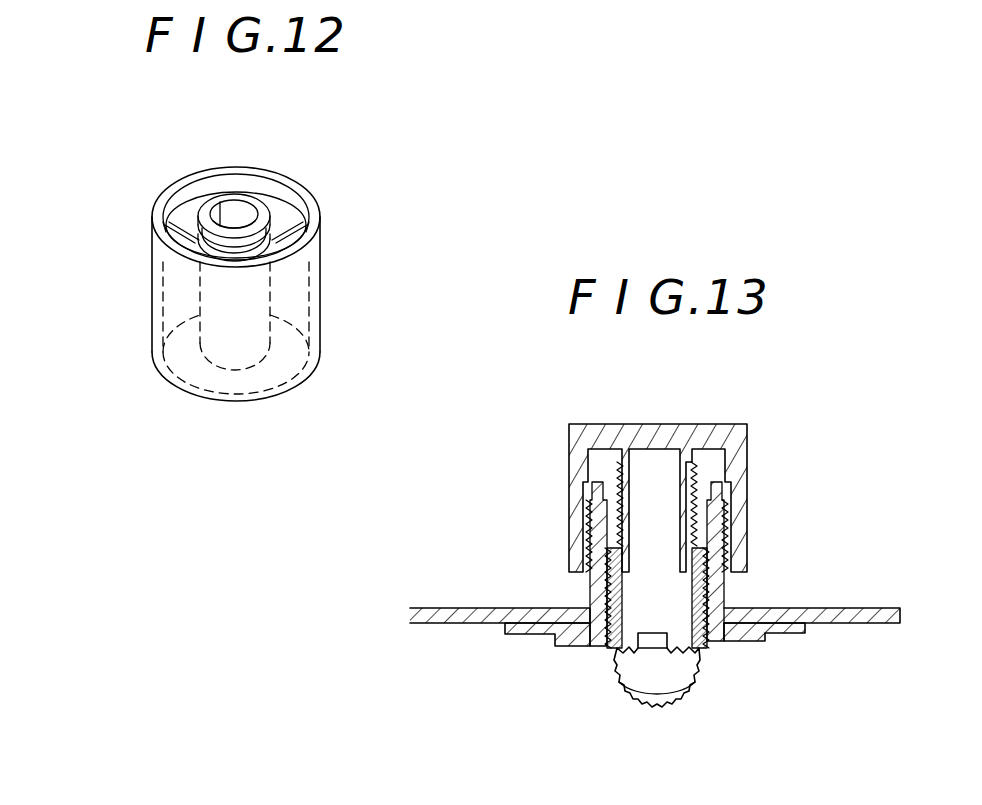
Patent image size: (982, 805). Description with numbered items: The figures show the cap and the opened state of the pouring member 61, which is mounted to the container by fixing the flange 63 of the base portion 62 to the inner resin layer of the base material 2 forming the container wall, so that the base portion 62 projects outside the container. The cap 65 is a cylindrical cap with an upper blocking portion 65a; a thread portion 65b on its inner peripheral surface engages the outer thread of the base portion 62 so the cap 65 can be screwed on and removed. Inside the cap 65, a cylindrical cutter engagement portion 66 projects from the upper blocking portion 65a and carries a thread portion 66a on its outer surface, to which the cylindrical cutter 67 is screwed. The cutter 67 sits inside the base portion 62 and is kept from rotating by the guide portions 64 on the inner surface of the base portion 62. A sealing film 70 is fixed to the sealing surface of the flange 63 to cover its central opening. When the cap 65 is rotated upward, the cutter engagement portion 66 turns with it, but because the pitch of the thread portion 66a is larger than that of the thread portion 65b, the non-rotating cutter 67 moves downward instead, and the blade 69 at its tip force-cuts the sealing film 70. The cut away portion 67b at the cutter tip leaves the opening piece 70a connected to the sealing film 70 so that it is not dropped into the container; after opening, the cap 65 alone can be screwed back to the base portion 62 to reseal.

In FIG. 13, the base material 2 is at (455, 608).
In FIG. 13, the pouring member 61 is at (655, 556).
In FIG. 13, the base portion 62 is at (674, 536).
In FIG. 13, the flange 63 is at (792, 628).
In FIG. 13, the guide portion 64 is at (712, 470).
In FIG. 12, the cap 65 is at (260, 283).
In FIG. 13, the cap 65 is at (740, 452).
In FIG. 12, the upper blocking portion 65a is at (287, 393).
In FIG. 12, the thread portion 65b is at (200, 197).
In FIG. 12, the cutter engagement portion 66 is at (255, 200).
In FIG. 13, the cutter engagement portion 66 is at (617, 468).
In FIG. 12, the thread portion 66a is at (190, 250).
In FIG. 13, the cutter 67 is at (600, 585).
In FIG. 13, the cut away portion 67b is at (645, 645).
In FIG. 13, the blade 69 is at (706, 652).
In FIG. 13, the sealing film 70 is at (585, 647).
In FIG. 13, the opening piece 70a is at (672, 688).